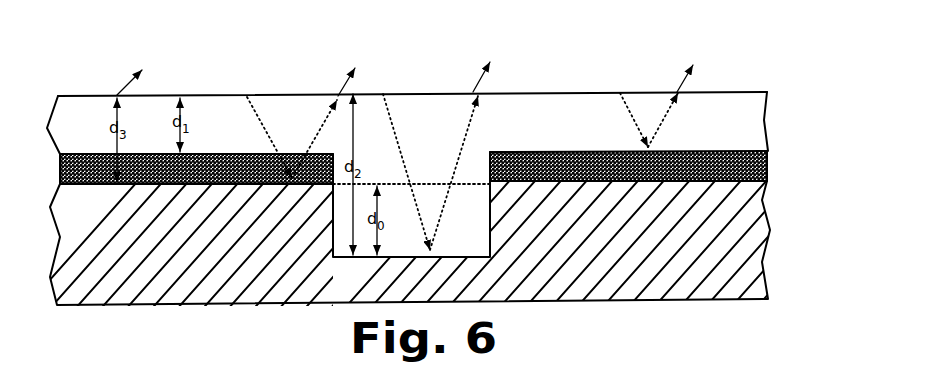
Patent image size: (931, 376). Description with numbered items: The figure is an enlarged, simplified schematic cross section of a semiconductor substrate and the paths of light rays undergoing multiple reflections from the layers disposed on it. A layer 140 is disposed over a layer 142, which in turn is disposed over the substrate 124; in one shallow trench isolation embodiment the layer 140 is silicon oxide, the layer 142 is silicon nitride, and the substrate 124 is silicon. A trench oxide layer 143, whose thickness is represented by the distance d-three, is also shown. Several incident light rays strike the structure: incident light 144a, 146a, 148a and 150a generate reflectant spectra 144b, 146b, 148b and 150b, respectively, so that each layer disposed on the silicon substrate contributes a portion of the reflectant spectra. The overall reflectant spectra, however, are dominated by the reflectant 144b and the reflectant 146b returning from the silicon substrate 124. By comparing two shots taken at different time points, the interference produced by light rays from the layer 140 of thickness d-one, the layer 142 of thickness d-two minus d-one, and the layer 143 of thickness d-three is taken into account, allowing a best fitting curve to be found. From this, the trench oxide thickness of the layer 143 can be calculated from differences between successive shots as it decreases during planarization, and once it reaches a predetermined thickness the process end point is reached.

The substrate 124 is at (768, 212).
The layer 140 is at (763, 120).
The layer 142 is at (769, 167).
The layer 143 is at (478, 250).
The incident light 144a is at (245, 95).
The reflectant spectrum 144b is at (346, 82).
The incident light 146a is at (382, 92).
The reflectant spectrum 146b is at (480, 80).
The incident light 148a is at (620, 92).
The reflectant spectrum 148b is at (686, 78).
The incident light 150a is at (117, 95).
The reflectant spectrum 150b is at (128, 84).